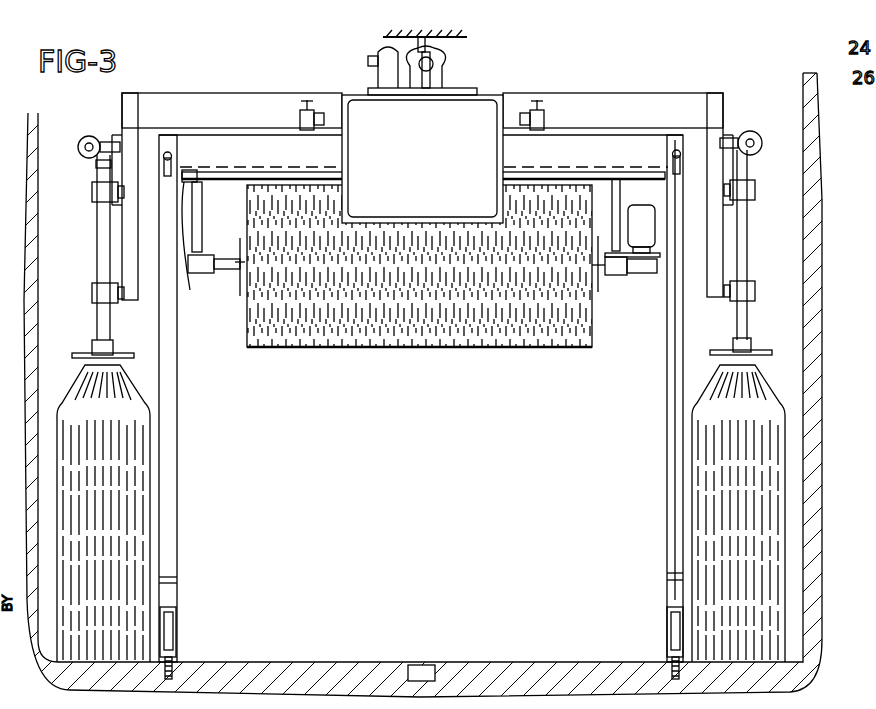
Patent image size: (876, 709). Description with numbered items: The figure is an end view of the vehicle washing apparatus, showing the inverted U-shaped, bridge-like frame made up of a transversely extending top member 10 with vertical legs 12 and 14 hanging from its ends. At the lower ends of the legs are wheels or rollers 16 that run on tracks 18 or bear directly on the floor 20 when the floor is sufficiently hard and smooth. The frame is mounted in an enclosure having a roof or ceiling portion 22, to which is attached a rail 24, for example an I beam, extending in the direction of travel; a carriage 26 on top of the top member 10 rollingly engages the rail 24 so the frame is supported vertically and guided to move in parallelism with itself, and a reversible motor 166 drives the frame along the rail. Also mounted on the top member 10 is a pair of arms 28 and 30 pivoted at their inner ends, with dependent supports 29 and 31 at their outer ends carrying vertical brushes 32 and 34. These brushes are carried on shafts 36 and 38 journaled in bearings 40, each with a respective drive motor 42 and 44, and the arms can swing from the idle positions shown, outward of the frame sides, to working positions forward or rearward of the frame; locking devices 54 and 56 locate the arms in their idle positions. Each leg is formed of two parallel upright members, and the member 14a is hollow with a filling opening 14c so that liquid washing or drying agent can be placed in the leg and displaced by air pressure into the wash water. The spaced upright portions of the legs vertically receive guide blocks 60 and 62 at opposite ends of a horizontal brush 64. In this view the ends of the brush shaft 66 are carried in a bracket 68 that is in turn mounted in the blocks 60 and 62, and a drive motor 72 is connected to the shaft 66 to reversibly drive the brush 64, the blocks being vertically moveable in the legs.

The top member 10 is at (572, 142).
The vertical leg 12 is at (170, 481).
The vertical leg 14 is at (666, 483).
The upright member 14a is at (667, 432).
The filling opening 14c is at (668, 160).
The wheels or rollers 16 is at (172, 626).
The tracks 18 is at (175, 665).
The floor 20 is at (340, 664).
The roof or ceiling portion 22 is at (460, 37).
The rail 24 is at (392, 60).
The carriage 26 is at (448, 62).
The arm 28 is at (185, 104).
The dependent support 29 is at (125, 122).
The arm 30 is at (668, 101).
The dependent support 31 is at (712, 133).
The vertical brush 32 is at (135, 458).
The vertical brush 34 is at (775, 468).
The shaft 36 is at (97, 252).
The shaft 38 is at (748, 237).
The bearings 40 is at (92, 190).
The drive motor 42 is at (78, 147).
The drive motor 44 is at (762, 144).
The locking device 54 is at (303, 108).
The locking device 56 is at (542, 108).
The guide block 60 is at (190, 275).
The guide block 62 is at (632, 278).
The horizontal brush 64 is at (420, 350).
The shaft 66 is at (210, 257).
The bracket 68 is at (207, 185).
The drive motor 72 is at (640, 212).
The reversible motor 166 is at (370, 56).